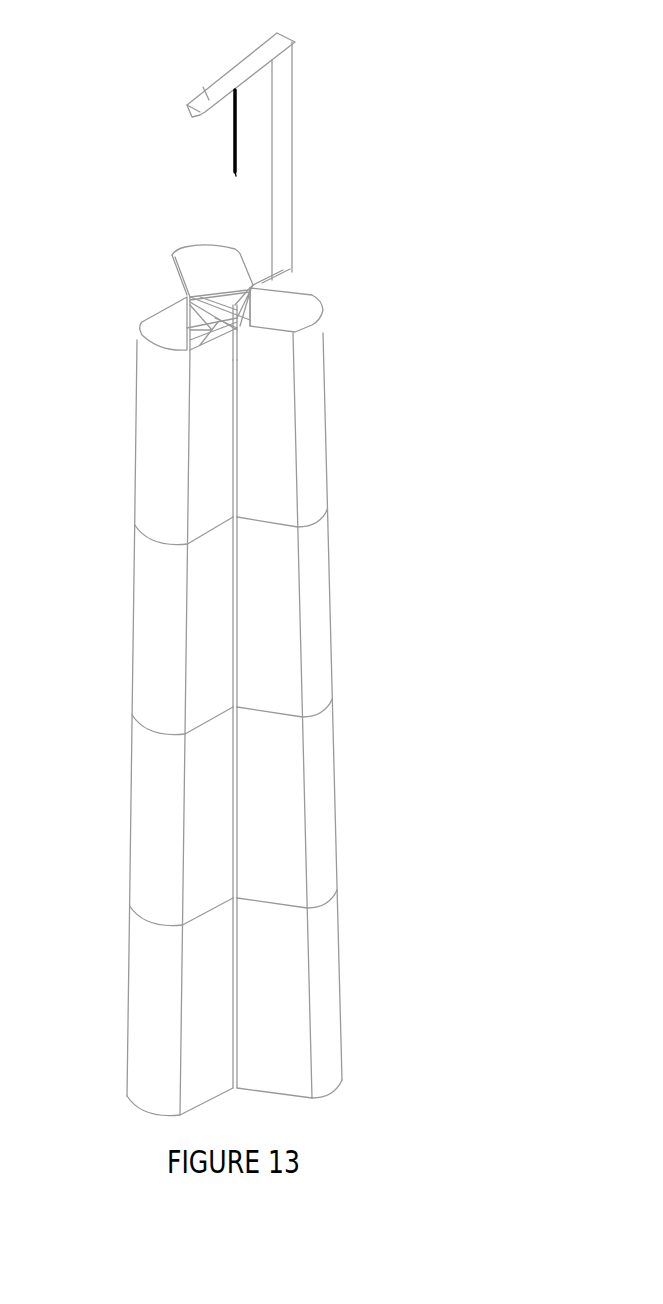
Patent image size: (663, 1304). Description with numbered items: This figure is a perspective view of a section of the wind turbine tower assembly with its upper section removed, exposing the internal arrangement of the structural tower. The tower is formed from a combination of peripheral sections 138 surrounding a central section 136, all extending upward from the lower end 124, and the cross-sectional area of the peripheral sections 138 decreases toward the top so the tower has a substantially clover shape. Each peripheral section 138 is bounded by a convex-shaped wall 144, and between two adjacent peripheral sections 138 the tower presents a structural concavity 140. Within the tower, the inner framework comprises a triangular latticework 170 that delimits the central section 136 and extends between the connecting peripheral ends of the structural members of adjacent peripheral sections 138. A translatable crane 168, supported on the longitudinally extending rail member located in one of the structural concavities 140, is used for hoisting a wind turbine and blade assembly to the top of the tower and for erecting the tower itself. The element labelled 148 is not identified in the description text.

The lower end 124 is at (288, 1098).
The central section 136 is at (226, 286).
The peripheral sections 138 is at (205, 267).
The structural concavities 140 is at (142, 289).
The convex-shaped walls 144 is at (192, 272).
The lower column panel 148 is at (203, 847).
The translatable crane 168 is at (292, 155).
The triangular latticework 170 is at (250, 310).